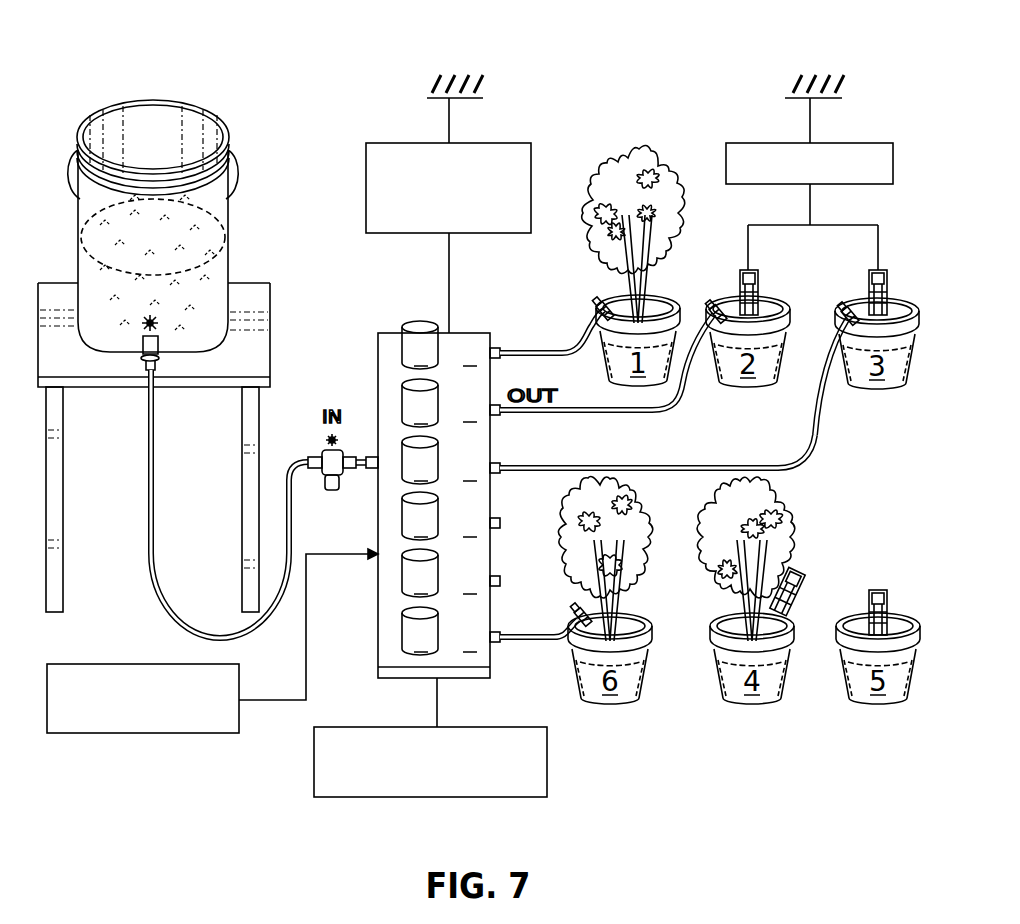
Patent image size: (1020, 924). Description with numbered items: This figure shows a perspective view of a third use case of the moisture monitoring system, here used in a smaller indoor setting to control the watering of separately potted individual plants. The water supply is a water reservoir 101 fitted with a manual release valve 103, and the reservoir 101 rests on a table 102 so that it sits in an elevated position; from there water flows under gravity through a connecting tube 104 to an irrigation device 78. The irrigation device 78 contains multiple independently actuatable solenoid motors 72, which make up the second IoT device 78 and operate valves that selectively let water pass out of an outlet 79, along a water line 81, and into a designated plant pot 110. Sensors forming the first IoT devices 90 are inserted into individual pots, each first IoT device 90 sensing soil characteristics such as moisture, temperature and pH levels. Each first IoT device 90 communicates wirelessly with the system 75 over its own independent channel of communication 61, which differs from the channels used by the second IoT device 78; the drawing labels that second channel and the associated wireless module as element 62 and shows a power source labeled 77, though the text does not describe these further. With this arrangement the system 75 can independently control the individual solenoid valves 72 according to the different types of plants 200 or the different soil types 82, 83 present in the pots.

The channel of communication 61 is at (750, 143).
The Wi-Fi or cellular module (channel 2) 62 is at (381, 143).
The solenoid motor 72 is at (420, 326).
The system 75 is at (128, 738).
The battery or power outlet 77 is at (548, 768).
The irrigation device 78 is at (388, 380).
The outlet 79 is at (510, 465).
The water line 81 is at (813, 444).
The soil type 82 is at (716, 306).
The soil type 83 is at (851, 309).
The first IoT device 90 is at (882, 270).
The water reservoir 101 is at (231, 217).
The table 102 is at (252, 312).
The manual release valve 103 is at (137, 346).
The connecting tube 104 is at (147, 500).
The plant pot 110 is at (586, 337).
The plant 200 is at (787, 555).